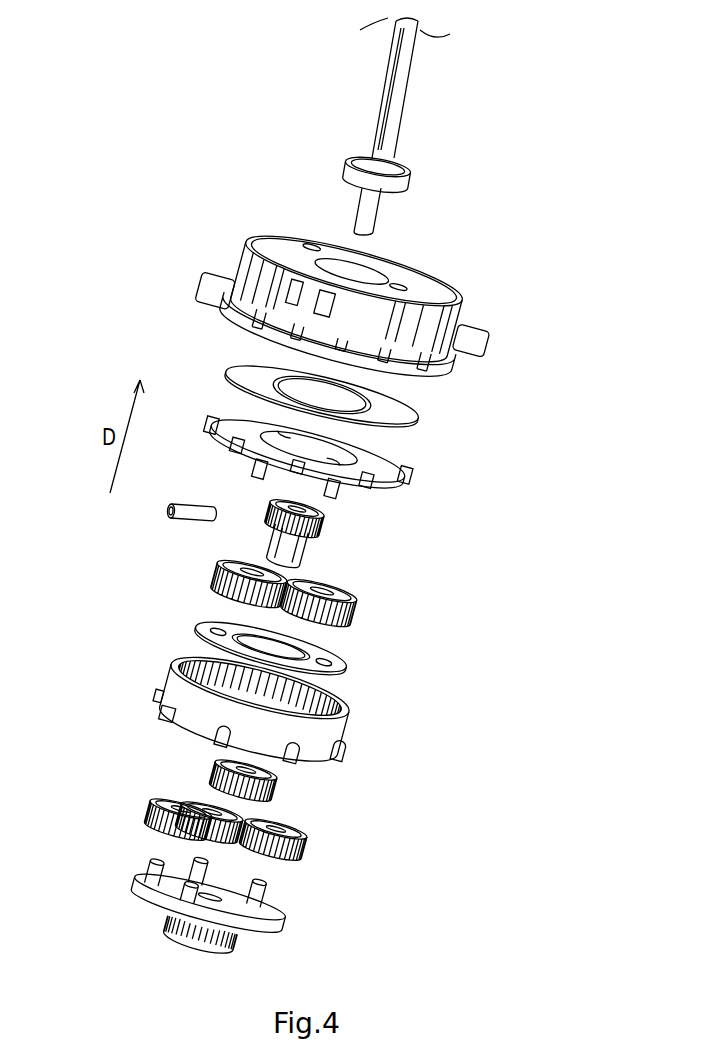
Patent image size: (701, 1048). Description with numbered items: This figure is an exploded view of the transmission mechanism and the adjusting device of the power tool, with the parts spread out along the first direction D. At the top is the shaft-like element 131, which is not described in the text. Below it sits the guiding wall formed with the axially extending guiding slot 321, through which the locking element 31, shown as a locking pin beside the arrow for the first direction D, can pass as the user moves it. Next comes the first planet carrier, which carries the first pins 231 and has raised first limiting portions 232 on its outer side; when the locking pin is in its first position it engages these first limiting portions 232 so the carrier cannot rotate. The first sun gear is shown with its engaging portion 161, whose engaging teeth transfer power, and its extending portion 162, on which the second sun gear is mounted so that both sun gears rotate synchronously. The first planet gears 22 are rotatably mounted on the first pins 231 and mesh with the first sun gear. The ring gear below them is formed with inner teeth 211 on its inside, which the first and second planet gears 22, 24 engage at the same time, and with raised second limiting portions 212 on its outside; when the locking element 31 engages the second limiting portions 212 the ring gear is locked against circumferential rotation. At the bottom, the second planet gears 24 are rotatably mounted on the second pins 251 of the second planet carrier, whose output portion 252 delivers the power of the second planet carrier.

The output shaft 131 is at (380, 123).
The guiding slot 321 is at (228, 320).
The first pins 231 is at (257, 468).
The first limiting portions 232 is at (408, 477).
The locking element 31 is at (168, 515).
The engaging portion 161 is at (327, 522).
The extending portion 162 is at (313, 553).
The first planet gear 22 is at (358, 617).
The inner teeth 211 is at (172, 663).
The second limiting portions 212 is at (347, 755).
The second planet gear 24 is at (297, 857).
The second pins 251 is at (153, 863).
The output portion 252 is at (243, 937).